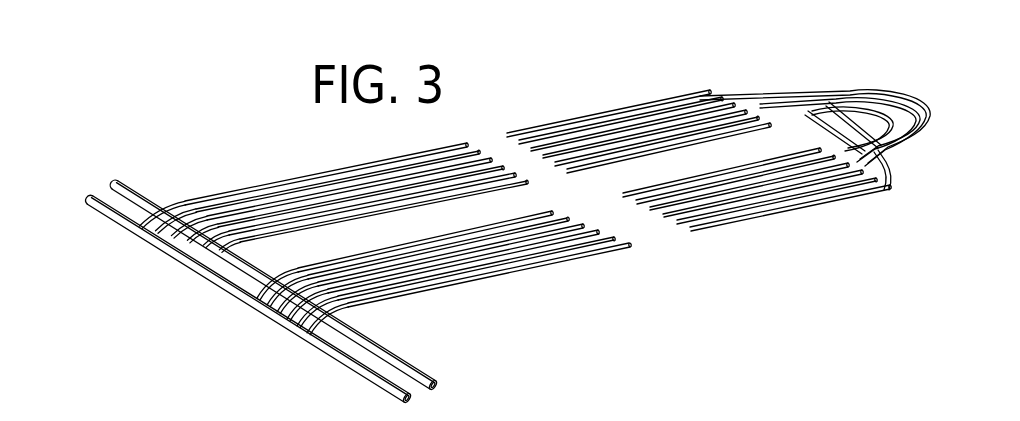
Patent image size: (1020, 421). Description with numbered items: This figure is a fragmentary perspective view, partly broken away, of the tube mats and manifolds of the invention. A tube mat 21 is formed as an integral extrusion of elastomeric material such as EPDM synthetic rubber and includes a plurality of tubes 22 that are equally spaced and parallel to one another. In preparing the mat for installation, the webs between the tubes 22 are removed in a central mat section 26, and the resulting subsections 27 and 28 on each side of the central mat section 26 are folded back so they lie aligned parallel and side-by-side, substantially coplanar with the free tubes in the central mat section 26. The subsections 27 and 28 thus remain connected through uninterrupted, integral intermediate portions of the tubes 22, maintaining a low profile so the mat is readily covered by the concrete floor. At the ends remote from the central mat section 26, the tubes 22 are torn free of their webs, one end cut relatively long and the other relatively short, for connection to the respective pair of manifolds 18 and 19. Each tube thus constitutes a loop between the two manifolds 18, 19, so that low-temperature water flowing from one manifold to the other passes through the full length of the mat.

The manifold 18 is at (417, 370).
The manifold 19 is at (356, 363).
The tube mat 21 is at (470, 262).
The tubes 22 is at (209, 232).
The central mat section 26 is at (853, 88).
The subsection 27 is at (605, 106).
The subsection 28 is at (465, 266).